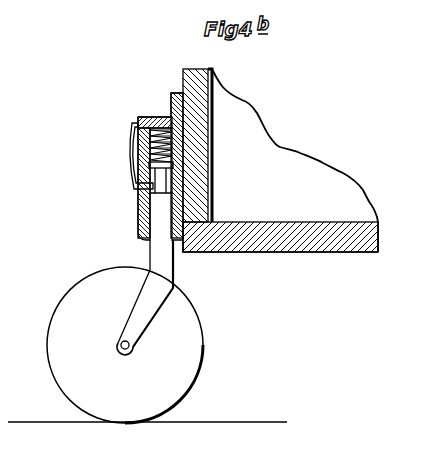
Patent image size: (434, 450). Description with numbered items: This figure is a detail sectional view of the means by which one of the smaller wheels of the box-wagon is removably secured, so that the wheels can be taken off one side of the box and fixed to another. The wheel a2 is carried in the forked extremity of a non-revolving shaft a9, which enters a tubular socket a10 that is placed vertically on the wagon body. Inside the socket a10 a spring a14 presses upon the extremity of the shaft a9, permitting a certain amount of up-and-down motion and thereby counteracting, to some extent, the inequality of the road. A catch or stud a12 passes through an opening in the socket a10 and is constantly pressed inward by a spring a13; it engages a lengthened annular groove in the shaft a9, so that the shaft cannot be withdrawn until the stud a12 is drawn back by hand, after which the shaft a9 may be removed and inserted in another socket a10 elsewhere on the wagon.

The spring a14 is at (183, 142).
The tubular portion or socket a10 is at (162, 117).
The catch or stud a12 is at (140, 196).
The spring a13 is at (134, 160).
The non-revolving shaft a9 is at (145, 297).
The wheel a2 is at (175, 340).